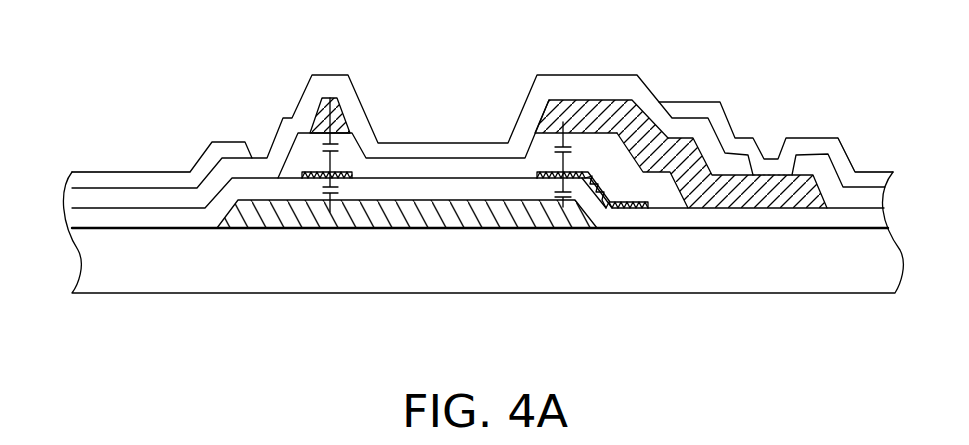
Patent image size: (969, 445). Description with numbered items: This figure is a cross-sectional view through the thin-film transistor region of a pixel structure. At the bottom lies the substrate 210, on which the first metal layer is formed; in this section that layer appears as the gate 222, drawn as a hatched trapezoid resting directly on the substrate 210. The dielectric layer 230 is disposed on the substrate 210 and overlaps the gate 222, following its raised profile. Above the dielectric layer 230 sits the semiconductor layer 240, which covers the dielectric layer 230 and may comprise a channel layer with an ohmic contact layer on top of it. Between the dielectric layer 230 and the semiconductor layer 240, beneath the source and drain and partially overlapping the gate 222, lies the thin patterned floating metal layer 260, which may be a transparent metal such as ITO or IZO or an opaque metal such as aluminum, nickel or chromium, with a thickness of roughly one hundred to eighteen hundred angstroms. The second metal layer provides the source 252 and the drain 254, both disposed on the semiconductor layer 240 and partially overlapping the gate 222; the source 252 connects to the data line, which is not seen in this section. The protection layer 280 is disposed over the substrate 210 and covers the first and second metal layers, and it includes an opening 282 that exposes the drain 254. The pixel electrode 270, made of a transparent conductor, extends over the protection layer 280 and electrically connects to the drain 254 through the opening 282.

The substrate 210 is at (815, 277).
The gate 222 is at (423, 217).
The dielectric layer 230 is at (740, 222).
The semiconductor layer 240 is at (666, 210).
The source 252 is at (333, 100).
The drain 254 is at (581, 108).
The patterned floating metal layer 260 is at (281, 178).
The pixel electrode 270 is at (823, 139).
The protection layer 280 is at (867, 198).
The opening 282 is at (787, 157).